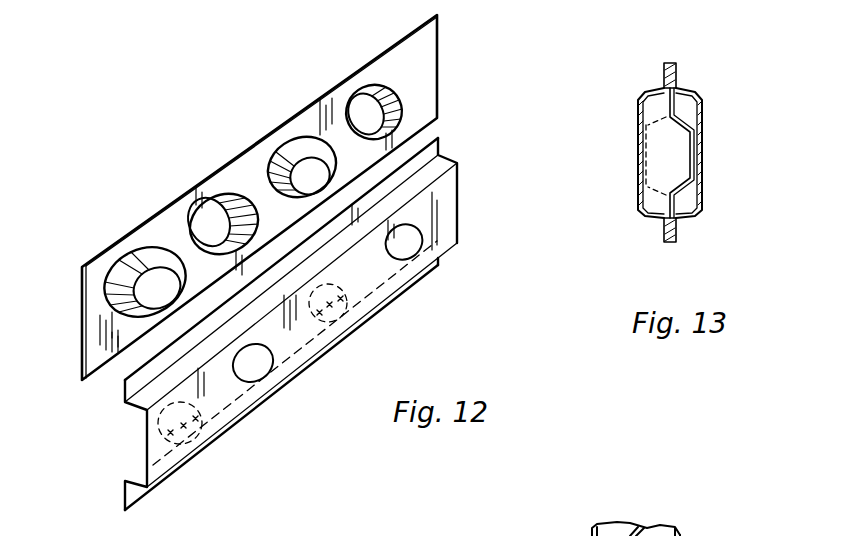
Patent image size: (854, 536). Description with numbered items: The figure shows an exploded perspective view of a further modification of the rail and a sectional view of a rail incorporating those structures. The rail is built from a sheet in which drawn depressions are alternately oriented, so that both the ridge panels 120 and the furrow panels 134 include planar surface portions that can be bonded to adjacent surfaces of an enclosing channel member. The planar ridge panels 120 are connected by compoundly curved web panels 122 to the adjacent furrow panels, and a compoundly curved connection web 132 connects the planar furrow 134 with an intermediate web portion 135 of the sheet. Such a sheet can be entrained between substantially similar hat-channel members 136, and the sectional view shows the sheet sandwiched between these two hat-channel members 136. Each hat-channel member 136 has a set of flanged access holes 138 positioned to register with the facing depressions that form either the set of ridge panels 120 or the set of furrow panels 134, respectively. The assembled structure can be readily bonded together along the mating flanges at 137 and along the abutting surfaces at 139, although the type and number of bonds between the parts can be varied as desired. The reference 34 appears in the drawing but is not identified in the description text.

In FIG. 12, the plate 34 is at (93, 347).
In FIG. 13, the plate 34 is at (682, 118).
In FIG. 12, the ridge panels 120 is at (152, 278).
In FIG. 12, the compoundly curved web panels 122 is at (125, 293).
In FIG. 12, the compoundly curved connection web 132 is at (242, 194).
In FIG. 12, the furrow panels 134 is at (205, 220).
In FIG. 12, the intermediate web portion 135 is at (290, 143).
In FIG. 12, the hat-channel members 136 is at (450, 180).
In FIG. 13, the hat-channel members 136 is at (642, 217).
In FIG. 13, the mating flanges 137 is at (682, 68).
In FIG. 12, the flanged access holes 138 is at (265, 368).
In FIG. 13, the flanged access holes 138 is at (642, 177).
In FIG. 13, the abutting surfaces 139 is at (707, 142).